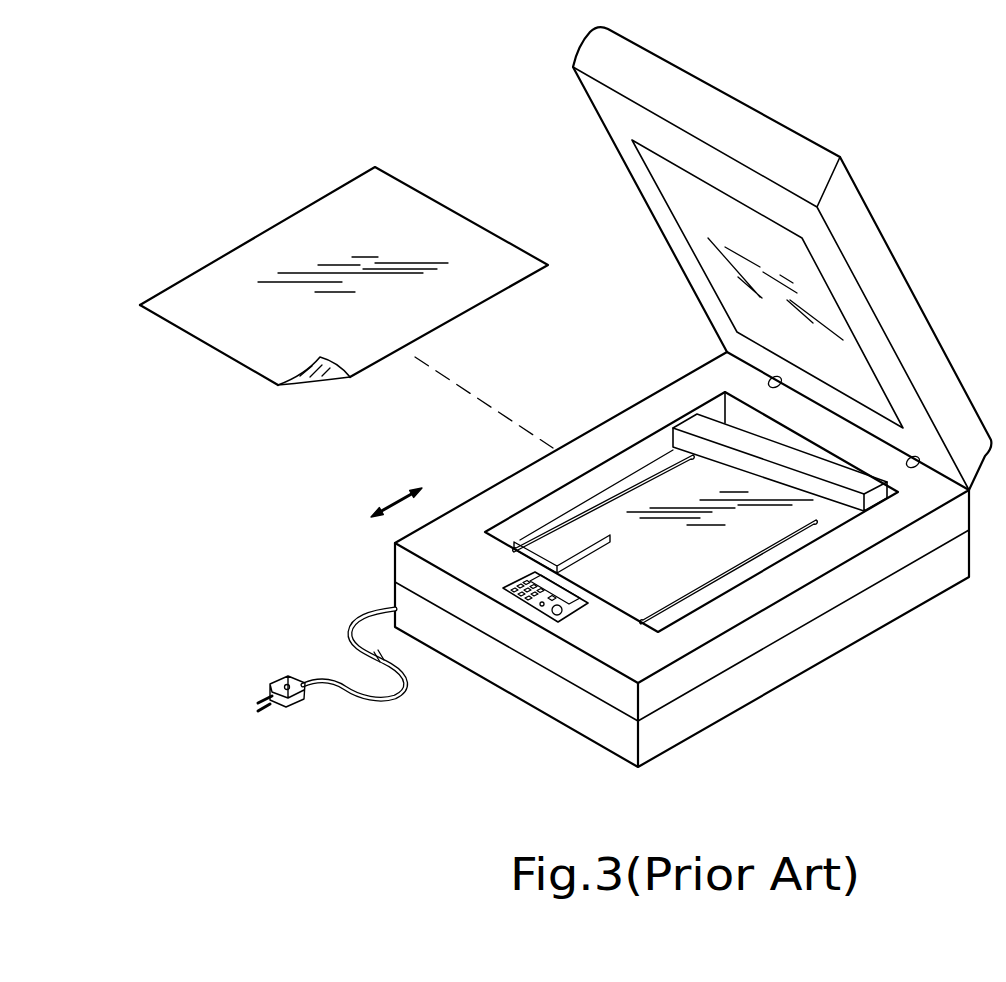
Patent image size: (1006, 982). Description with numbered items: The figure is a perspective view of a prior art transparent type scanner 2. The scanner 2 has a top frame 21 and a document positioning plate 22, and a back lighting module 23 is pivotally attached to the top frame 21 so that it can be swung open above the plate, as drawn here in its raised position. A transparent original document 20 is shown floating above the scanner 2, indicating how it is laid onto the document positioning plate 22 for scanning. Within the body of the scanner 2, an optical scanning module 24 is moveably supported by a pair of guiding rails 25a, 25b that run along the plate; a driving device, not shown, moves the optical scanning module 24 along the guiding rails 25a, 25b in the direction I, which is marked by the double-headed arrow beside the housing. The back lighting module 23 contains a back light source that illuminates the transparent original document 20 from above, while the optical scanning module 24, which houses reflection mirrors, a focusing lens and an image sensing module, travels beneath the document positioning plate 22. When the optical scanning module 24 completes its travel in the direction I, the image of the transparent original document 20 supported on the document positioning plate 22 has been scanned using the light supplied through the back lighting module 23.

The transparent type scanner 2 is at (545, 688).
The transparent original document 20 is at (313, 230).
The top frame 21 is at (910, 508).
The document positioning plate 22 is at (660, 573).
The back lighting module 23 is at (905, 300).
The optical scanning module 24 is at (850, 510).
The guiding rail 25a is at (657, 470).
The guiding rail 25b is at (775, 545).
The direction I is at (386, 516).